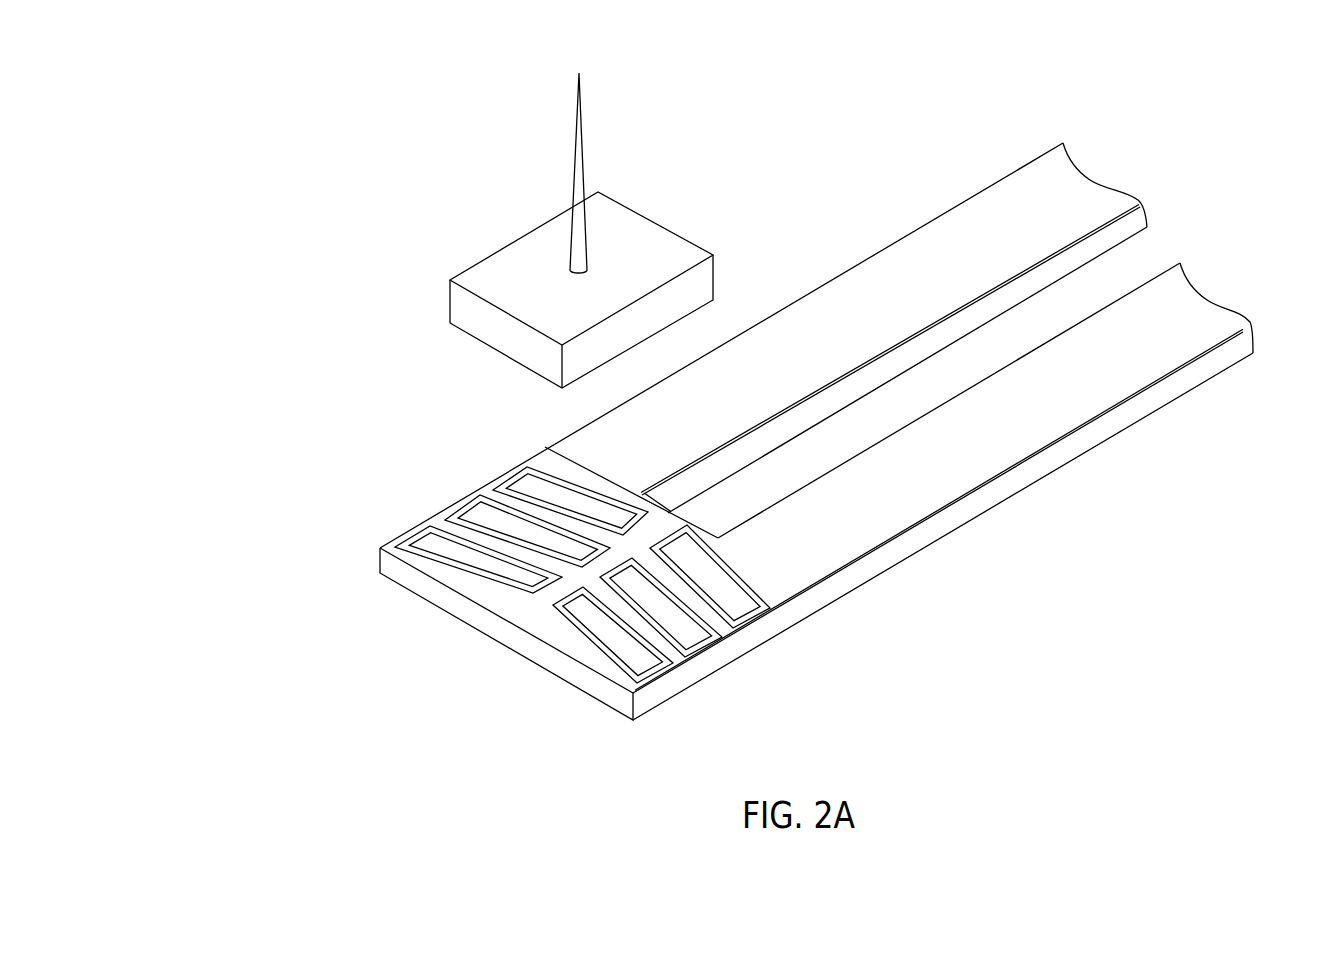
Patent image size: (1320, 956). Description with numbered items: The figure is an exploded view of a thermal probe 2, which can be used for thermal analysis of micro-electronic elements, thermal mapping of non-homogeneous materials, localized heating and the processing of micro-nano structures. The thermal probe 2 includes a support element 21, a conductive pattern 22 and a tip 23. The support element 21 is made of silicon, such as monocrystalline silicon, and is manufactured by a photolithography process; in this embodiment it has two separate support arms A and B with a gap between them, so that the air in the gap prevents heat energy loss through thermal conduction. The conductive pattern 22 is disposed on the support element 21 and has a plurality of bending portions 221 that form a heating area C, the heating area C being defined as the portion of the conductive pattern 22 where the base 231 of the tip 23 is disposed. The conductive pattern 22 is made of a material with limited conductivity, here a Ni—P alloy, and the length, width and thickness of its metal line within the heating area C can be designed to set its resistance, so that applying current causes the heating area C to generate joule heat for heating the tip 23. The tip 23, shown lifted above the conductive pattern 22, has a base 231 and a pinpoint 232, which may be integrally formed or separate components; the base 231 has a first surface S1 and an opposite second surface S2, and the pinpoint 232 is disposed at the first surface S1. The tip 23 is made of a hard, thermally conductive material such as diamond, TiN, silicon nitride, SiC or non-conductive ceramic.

The thermal probe 2 is at (205, 172).
The support element 21 is at (867, 573).
The conductive pattern 22 is at (878, 278).
The bending portions 221 is at (416, 528).
The tip 23 is at (462, 152).
The base 231 is at (533, 253).
The pinpoint 232 is at (577, 124).
The support arm A is at (946, 233).
The support arm B is at (1150, 363).
The heating area C is at (498, 541).
The first surface S1 is at (472, 278).
The second surface S2 is at (508, 360).